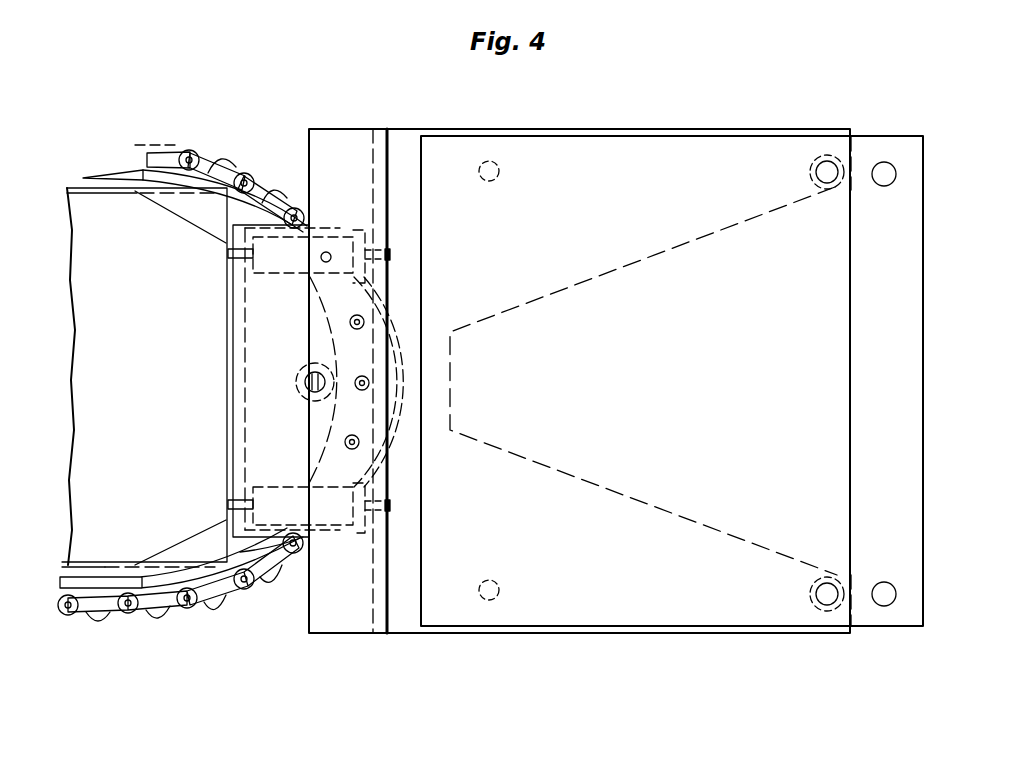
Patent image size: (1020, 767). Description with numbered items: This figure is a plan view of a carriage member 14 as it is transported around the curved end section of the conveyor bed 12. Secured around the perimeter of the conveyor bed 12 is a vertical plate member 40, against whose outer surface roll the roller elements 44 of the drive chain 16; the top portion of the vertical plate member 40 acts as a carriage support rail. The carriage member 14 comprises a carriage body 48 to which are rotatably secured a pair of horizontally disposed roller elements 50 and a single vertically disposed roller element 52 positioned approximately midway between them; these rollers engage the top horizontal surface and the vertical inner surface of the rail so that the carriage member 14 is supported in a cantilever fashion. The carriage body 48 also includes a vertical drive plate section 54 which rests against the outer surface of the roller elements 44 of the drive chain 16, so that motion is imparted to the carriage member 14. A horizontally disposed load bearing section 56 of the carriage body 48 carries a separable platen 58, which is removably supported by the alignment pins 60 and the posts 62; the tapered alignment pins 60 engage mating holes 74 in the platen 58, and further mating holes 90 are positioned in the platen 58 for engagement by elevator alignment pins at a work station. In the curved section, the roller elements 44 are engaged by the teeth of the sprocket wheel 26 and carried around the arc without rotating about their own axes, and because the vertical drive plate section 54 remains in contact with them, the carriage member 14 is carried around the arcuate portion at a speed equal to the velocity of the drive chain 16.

The conveyor bed 12 is at (162, 360).
The carriage member 14 is at (641, 638).
The drive chain 16 is at (209, 613).
The sprocket wheel 26 is at (232, 166).
The vertical plate member 40 is at (112, 570).
The roller elements 44 is at (190, 150).
The carriage body 48 is at (366, 636).
The horizontally disposed roller elements 50 is at (291, 283).
The vertically disposed roller element 52 is at (304, 401).
The vertical drive plate section 54 is at (390, 154).
The load bearing section 56 is at (662, 128).
The platen 58 is at (688, 393).
The alignment pins 60 is at (823, 374).
The posts 62 is at (498, 163).
The mating holes 74 is at (824, 160).
The mating holes 90 is at (885, 161).